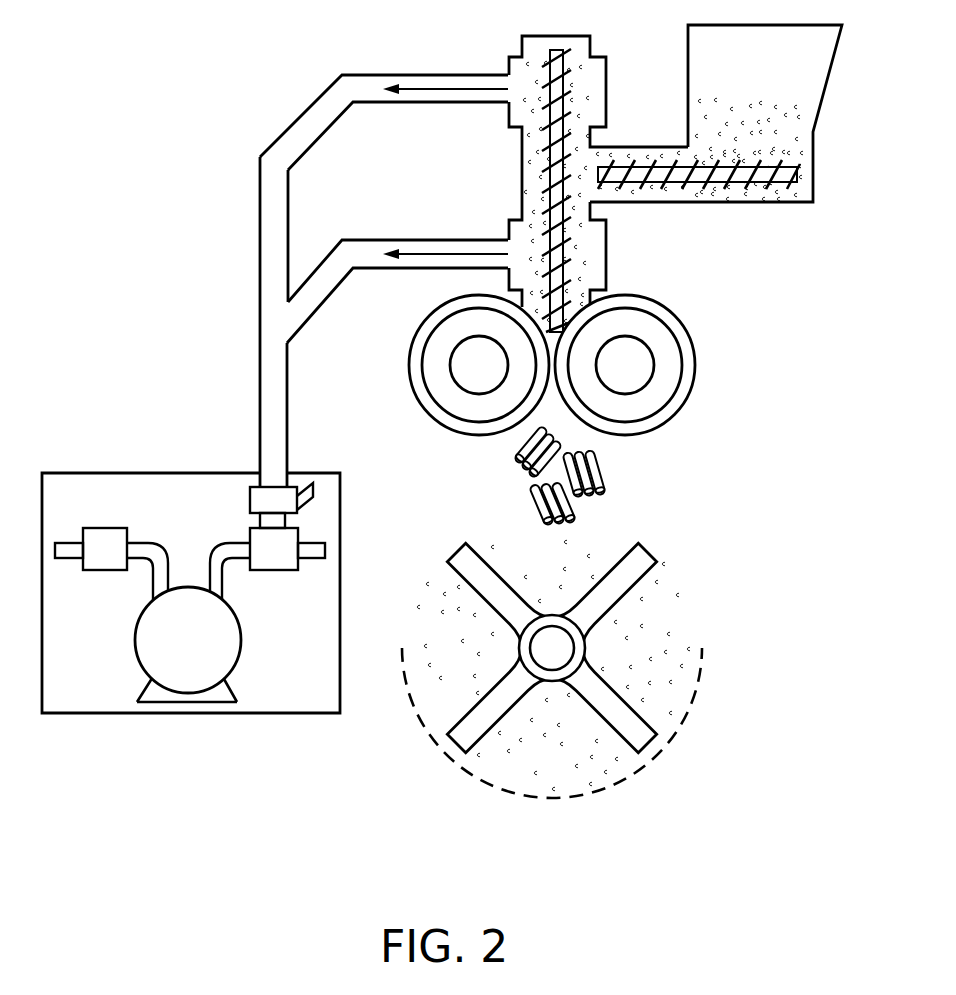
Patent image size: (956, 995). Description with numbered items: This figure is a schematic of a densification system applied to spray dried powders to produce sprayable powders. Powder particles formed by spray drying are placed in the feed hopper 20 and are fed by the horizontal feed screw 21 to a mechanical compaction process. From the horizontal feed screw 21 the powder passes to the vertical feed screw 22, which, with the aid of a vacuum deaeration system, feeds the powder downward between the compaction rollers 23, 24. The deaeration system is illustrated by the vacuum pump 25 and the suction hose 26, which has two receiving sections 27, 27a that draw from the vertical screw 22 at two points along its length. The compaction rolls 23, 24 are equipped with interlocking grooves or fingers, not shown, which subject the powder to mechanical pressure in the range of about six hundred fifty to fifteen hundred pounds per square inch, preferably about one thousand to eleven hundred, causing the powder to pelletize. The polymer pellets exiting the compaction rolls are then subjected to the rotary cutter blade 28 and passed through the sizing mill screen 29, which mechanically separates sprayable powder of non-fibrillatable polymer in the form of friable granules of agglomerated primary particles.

The feed hopper 20 is at (798, 78).
The horizontal feed screw 21 is at (773, 184).
The vertical feed screw 22 is at (565, 52).
The compaction roller 23 is at (682, 405).
The compaction roller 24 is at (423, 404).
The vacuum pump 25 is at (200, 670).
The suction hose 26 is at (271, 385).
The receiving section 27 is at (366, 237).
The receiving section 27a is at (328, 88).
The rotary cutter blade 28 is at (643, 578).
The sizing mill screen 29 is at (665, 747).